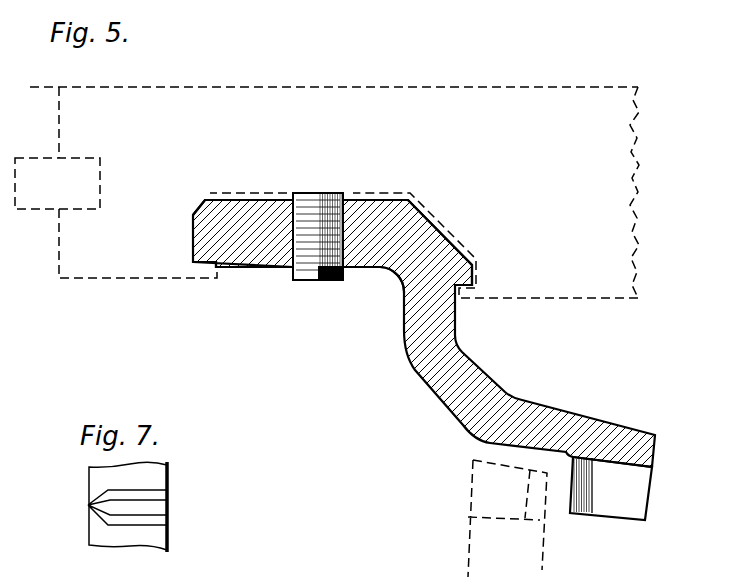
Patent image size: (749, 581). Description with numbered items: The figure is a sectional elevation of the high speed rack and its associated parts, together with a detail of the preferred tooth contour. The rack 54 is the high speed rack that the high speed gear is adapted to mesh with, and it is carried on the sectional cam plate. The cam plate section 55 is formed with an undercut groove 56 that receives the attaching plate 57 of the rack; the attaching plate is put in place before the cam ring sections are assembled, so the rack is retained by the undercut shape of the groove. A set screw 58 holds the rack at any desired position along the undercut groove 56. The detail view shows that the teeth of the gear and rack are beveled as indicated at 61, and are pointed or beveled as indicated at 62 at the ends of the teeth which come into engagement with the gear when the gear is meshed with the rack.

In FIG. 5, the rack 54 is at (548, 406).
In FIG. 5, the cam plate section 55 is at (331, 99).
In FIG. 5, the undercut groove 56 is at (362, 192).
In FIG. 5, the attaching plate 57 is at (255, 227).
In FIG. 5, the set screw 58 is at (313, 252).
In FIG. 7, the beveled teeth 61 is at (150, 494).
In FIG. 5, the pointed or beveled tooth ends 62 is at (588, 490).
In FIG. 7, the pointed or beveled tooth ends 62 is at (108, 493).